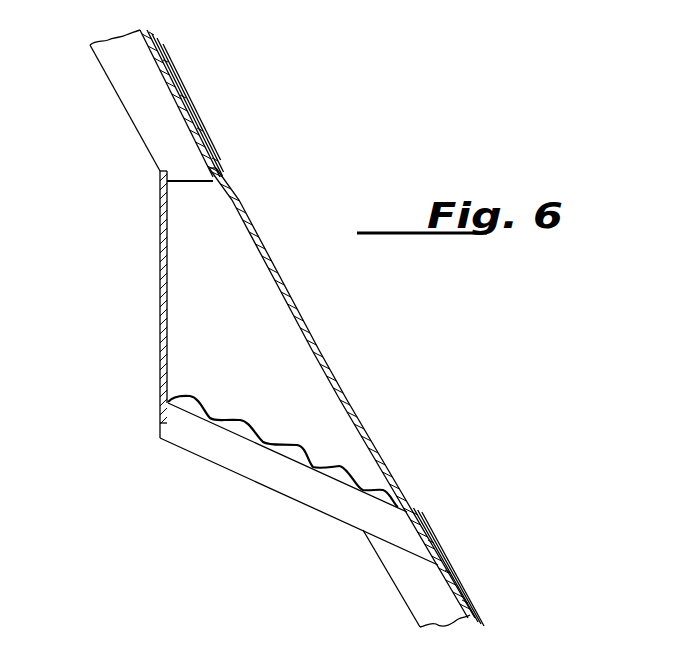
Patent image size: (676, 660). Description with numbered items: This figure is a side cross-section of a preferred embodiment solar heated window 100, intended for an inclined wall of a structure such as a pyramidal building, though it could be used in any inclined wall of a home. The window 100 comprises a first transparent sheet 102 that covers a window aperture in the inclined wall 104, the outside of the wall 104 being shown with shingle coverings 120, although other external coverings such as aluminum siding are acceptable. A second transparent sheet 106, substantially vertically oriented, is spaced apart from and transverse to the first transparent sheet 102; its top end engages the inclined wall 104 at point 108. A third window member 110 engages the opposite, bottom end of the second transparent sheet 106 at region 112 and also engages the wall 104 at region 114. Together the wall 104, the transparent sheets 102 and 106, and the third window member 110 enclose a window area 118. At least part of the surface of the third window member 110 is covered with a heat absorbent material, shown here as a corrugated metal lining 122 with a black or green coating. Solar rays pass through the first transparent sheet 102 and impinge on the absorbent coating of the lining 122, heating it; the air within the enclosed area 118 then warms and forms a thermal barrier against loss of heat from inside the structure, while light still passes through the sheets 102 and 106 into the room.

The solar heated window 100 is at (180, 73).
The first transparent sheet 102 is at (291, 303).
The inclined wall 104 is at (124, 108).
The second transparent sheet 106 is at (159, 289).
The point 108 is at (158, 173).
The third window member 110 is at (222, 467).
The region 112 is at (158, 420).
The region 114 is at (400, 552).
The window area 118 is at (293, 394).
The shingle coverings 120 is at (457, 553).
The corrugated metal lining 122 is at (340, 465).